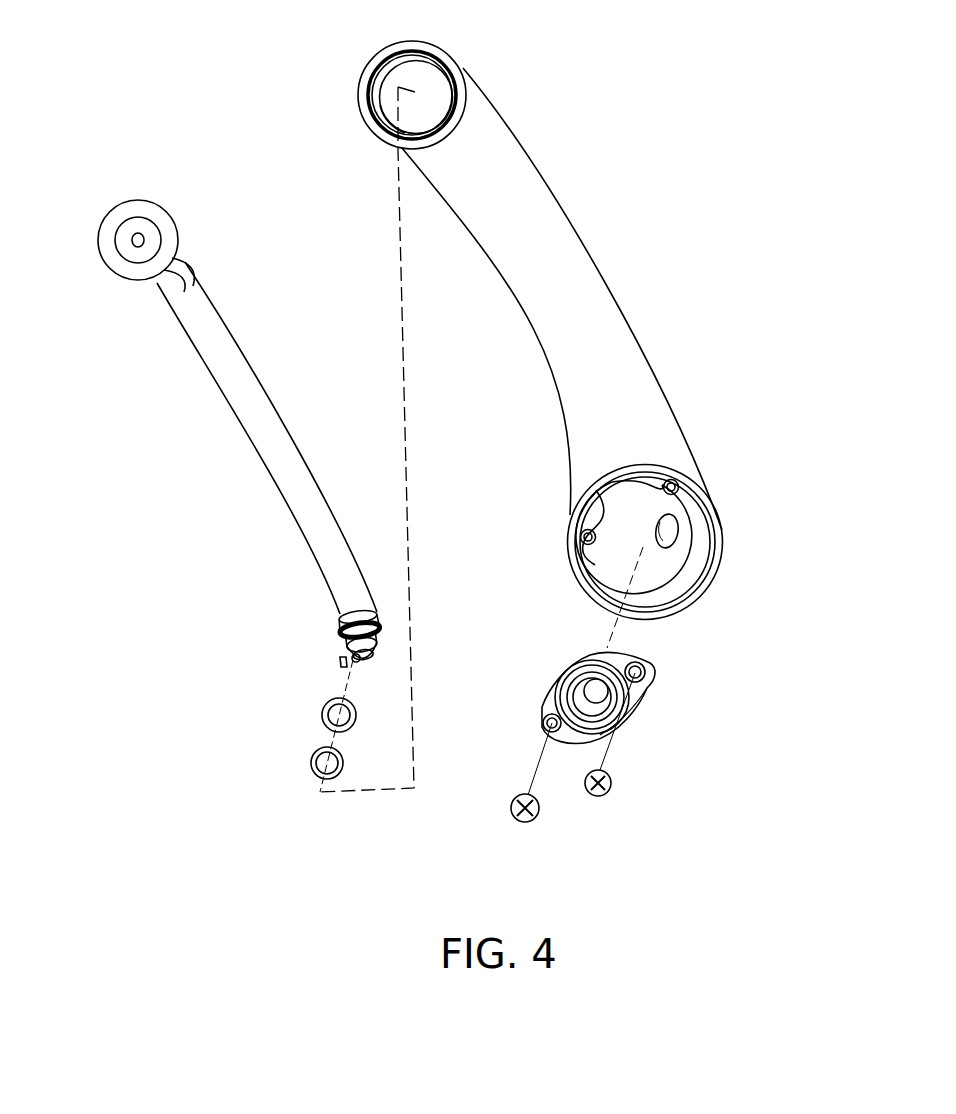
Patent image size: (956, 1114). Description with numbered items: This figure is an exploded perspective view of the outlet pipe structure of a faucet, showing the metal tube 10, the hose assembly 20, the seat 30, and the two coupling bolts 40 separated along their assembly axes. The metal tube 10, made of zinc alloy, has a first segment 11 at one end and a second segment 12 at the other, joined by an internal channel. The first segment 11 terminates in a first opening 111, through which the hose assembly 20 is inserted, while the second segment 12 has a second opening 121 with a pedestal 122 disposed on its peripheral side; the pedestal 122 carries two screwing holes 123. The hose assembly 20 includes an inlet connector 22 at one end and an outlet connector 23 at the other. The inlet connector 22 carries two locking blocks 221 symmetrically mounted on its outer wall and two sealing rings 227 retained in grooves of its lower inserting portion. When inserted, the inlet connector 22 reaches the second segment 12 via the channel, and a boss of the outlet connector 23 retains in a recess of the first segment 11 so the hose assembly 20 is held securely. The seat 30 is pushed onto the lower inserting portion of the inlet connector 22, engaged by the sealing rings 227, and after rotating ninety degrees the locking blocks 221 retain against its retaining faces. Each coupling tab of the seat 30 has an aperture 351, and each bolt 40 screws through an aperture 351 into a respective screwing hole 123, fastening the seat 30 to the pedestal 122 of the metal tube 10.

The metal tube 10 is at (634, 224).
The first segment 11 is at (360, 96).
The first opening 111 is at (428, 82).
The second segment 12 is at (720, 545).
The second opening 121 is at (697, 520).
The pedestal 122 is at (586, 518).
The screwing holes 123 is at (676, 481).
The hose assembly 20 is at (214, 419).
The inlet connector 22 is at (343, 628).
The locking blocks 221 is at (343, 660).
The sealing rings 227 is at (322, 716).
The outlet connector 23 is at (110, 252).
The seat 30 is at (660, 704).
The aperture 351 is at (642, 665).
The coupling bolts 40 is at (622, 781).